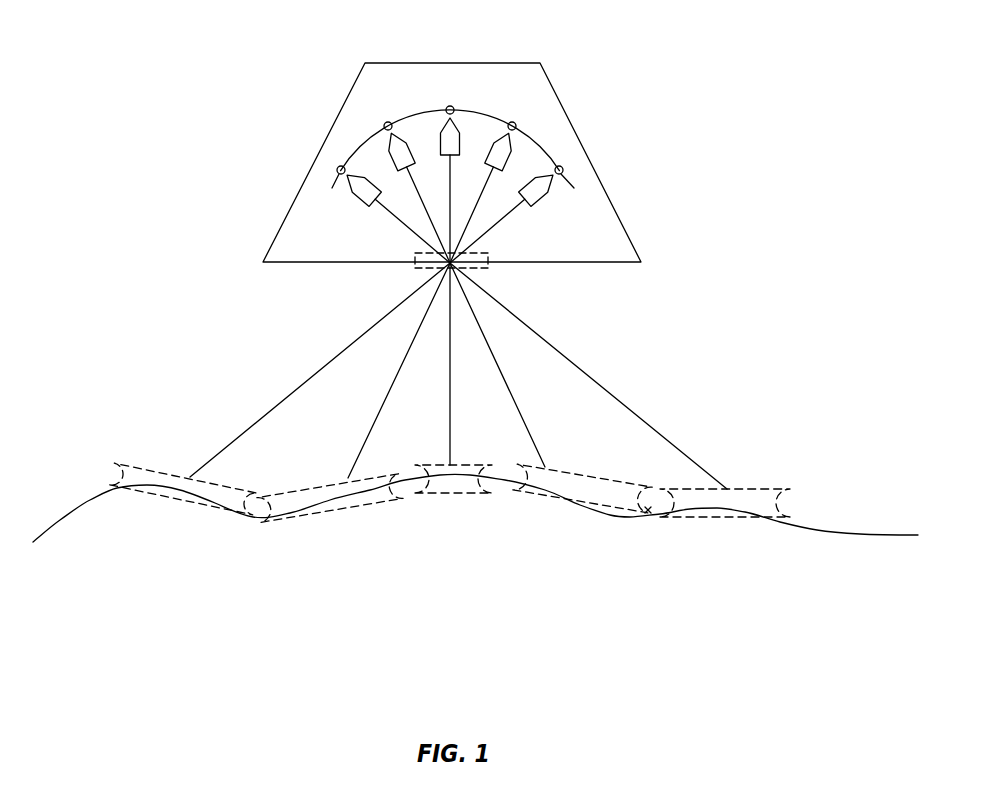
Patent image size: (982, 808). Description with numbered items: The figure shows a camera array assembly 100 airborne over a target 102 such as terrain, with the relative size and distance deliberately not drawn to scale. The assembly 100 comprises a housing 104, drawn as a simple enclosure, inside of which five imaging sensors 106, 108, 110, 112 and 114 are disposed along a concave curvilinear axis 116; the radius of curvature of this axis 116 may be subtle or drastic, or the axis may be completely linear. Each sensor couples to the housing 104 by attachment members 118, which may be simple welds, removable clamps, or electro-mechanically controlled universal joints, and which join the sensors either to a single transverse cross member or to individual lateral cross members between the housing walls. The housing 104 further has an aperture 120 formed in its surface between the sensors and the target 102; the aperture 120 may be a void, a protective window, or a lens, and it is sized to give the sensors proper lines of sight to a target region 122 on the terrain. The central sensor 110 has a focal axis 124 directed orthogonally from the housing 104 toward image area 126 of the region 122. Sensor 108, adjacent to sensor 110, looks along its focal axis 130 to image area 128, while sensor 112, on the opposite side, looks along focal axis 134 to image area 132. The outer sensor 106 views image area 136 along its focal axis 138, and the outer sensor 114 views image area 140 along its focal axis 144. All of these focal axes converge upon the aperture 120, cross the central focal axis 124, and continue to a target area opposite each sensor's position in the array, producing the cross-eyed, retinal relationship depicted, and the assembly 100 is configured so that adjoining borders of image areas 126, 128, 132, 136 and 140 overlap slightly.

The camera array assembly 100 is at (676, 67).
The target 102 is at (843, 532).
The housing 104 is at (630, 230).
The imaging sensor 106 is at (363, 203).
The imaging sensor 108 is at (392, 155).
The imaging sensor 110 is at (440, 145).
The imaging sensor 112 is at (506, 132).
The imaging sensor 114 is at (541, 198).
The concave curvilinear axis 116 is at (538, 137).
The attachment members 118 is at (449, 106).
The aperture 120 is at (488, 257).
The target region 122 is at (480, 522).
The focal axis 124 is at (448, 382).
The image area 126 is at (480, 465).
The image area 128 is at (598, 503).
The focal axis 130 is at (532, 437).
The image area 132 is at (353, 498).
The focal axis 134 is at (367, 433).
The image area 136 is at (753, 492).
The focal axis 138 is at (598, 383).
The image area 140 is at (125, 473).
The focal axis 144 is at (303, 382).